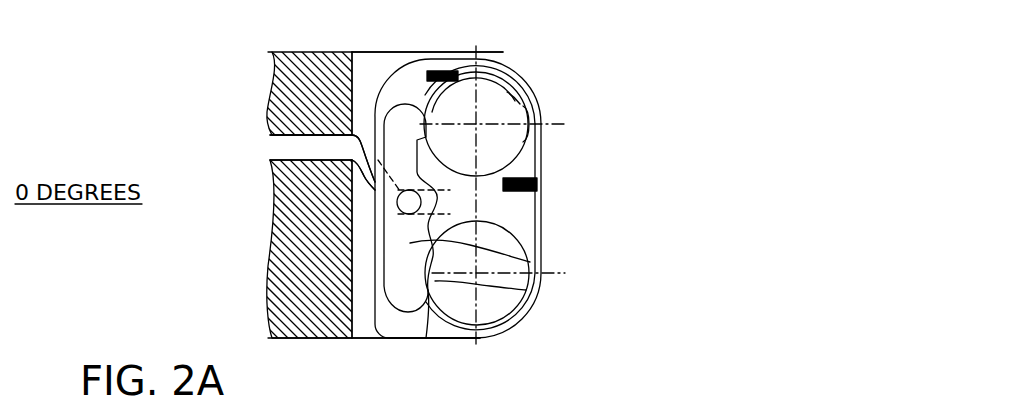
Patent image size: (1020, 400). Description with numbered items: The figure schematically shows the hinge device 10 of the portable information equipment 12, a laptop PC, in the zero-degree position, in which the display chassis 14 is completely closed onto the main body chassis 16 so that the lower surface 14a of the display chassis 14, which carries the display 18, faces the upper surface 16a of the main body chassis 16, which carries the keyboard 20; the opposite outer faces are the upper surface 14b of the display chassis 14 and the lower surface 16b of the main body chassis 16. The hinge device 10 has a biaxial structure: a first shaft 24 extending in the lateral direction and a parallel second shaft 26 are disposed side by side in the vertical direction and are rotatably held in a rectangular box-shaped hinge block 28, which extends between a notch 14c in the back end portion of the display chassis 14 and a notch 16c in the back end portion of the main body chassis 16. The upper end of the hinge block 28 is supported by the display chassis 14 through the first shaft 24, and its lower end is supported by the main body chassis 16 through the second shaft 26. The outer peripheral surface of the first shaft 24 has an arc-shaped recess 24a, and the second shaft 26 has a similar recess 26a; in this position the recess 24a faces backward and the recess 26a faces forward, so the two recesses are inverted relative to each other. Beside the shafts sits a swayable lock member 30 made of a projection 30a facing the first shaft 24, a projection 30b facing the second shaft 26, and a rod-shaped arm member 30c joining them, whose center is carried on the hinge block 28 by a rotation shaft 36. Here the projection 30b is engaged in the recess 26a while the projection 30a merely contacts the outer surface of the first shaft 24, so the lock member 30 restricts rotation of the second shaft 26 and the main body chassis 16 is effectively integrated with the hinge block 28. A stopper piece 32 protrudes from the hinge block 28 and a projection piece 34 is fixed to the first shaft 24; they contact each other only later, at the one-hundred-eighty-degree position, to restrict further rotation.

The hinge device 10 is at (628, 186).
The portable information equipment 12 is at (188, 77).
The display chassis 14 is at (288, 52).
The lower surface of the display chassis 14a is at (270, 135).
The upper surface of the display chassis 14b is at (335, 52).
The notch of the display chassis 14c is at (375, 58).
The main body chassis 16 is at (290, 338).
The upper surface of the main body chassis 16a is at (268, 160).
The lower surface of the main body chassis 16b is at (335, 338).
The notch of the main body chassis 16c is at (375, 332).
The display 18 is at (322, 158).
The keyboard 20 is at (322, 175).
The first shaft 24 is at (527, 108).
The first recess 24a is at (507, 92).
The second shaft 26 is at (510, 302).
The second recess 26a is at (429, 298).
The hinge block 28 is at (542, 212).
The lock member 30 is at (405, 103).
The projection facing the first shaft 30a is at (478, 96).
The projection facing the second shaft 30b is at (534, 289).
The arm member 30c is at (536, 261).
The stopper piece 32 is at (538, 179).
The projection piece 34 is at (449, 70).
The rotation shaft 36 is at (397, 203).